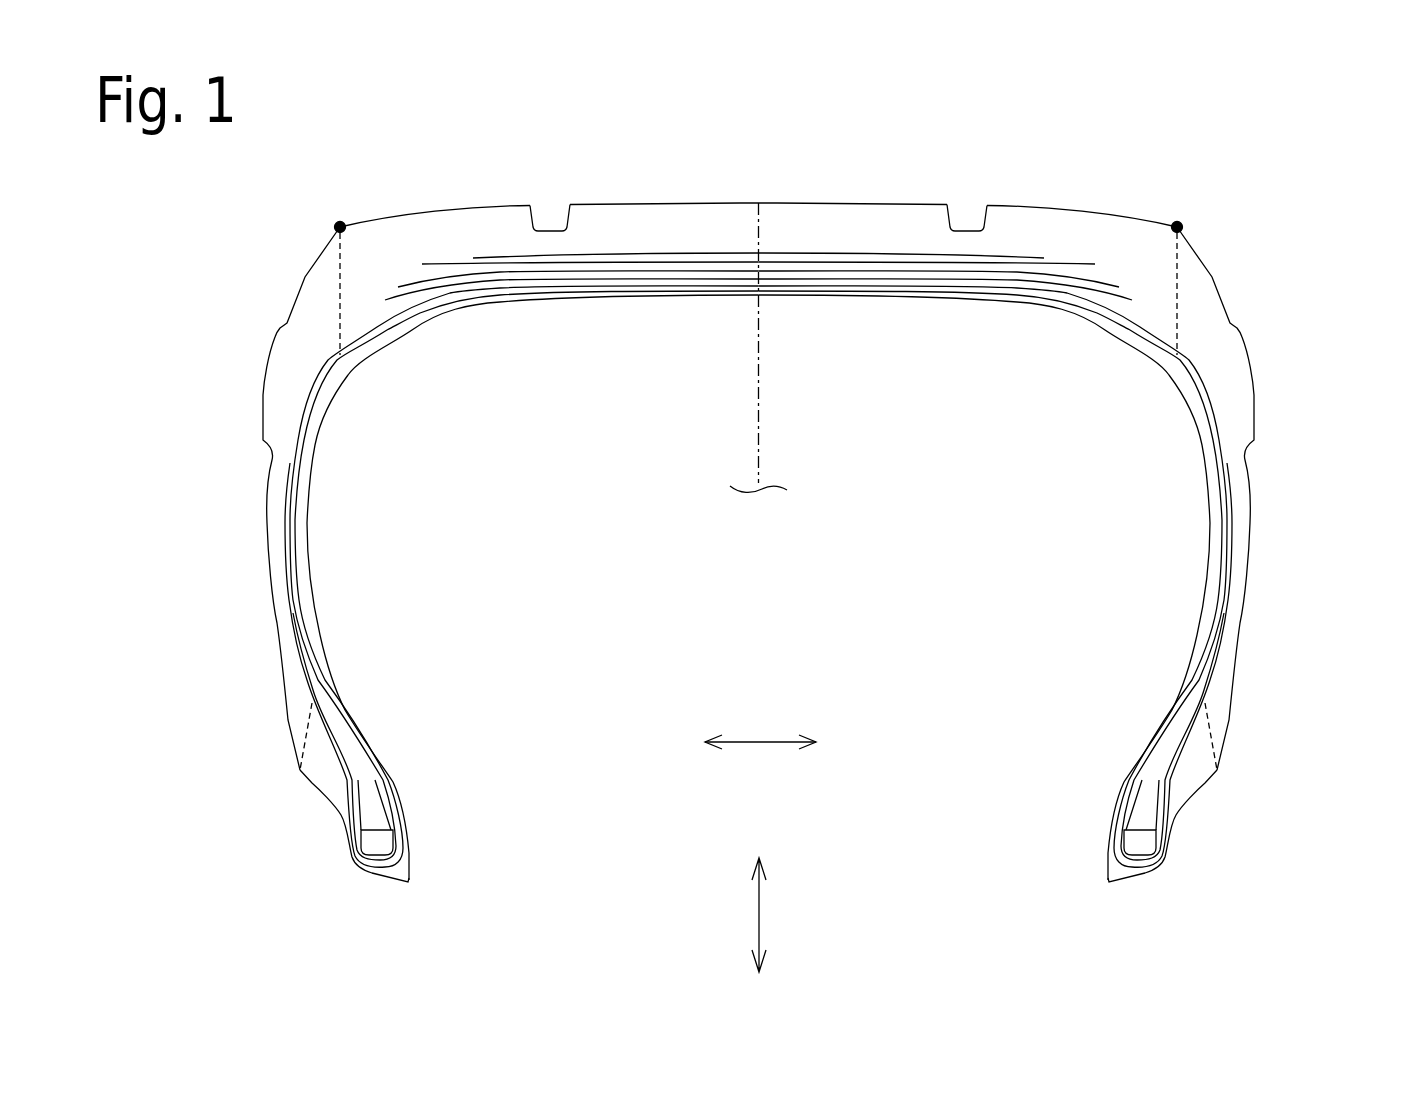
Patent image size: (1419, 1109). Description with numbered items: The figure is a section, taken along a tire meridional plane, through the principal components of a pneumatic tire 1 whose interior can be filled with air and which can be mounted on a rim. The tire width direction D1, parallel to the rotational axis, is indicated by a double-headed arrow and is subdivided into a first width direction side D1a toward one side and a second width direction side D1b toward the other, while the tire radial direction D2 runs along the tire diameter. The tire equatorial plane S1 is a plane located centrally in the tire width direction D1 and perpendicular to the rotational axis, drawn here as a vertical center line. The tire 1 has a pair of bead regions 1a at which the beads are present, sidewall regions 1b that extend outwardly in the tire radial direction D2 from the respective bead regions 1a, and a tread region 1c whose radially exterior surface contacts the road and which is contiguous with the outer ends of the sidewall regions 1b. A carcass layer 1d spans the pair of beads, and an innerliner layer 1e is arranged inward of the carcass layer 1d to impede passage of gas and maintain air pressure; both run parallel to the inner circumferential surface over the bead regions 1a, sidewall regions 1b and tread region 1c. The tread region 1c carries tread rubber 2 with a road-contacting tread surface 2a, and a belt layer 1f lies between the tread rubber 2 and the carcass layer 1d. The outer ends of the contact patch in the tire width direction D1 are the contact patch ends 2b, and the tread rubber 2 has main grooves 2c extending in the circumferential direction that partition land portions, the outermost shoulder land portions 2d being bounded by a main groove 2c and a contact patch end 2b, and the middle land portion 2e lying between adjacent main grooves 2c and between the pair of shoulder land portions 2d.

The pneumatic tire 1 is at (767, 492).
The bead region 1a is at (314, 857).
The sidewall region 1b is at (241, 477).
The tread region 1c is at (768, 190).
The carcass layer 1d is at (608, 285).
The innerliner layer 1e is at (829, 297).
The belt layer 1f is at (893, 254).
The tread rubber 2 is at (758, 159).
The tread surface 2a is at (758, 156).
The contact patch end 2b is at (758, 215).
The main groove 2c is at (549, 210).
The shoulder land portion 2d is at (432, 210).
The middle land portion 2e is at (758, 145).
The tire equatorial plane S1 is at (757, 452).
The tire width direction D1 is at (759, 735).
The first width direction side D1a is at (828, 742).
The second width direction side D1b is at (691, 742).
The tire radial direction D2 is at (773, 915).